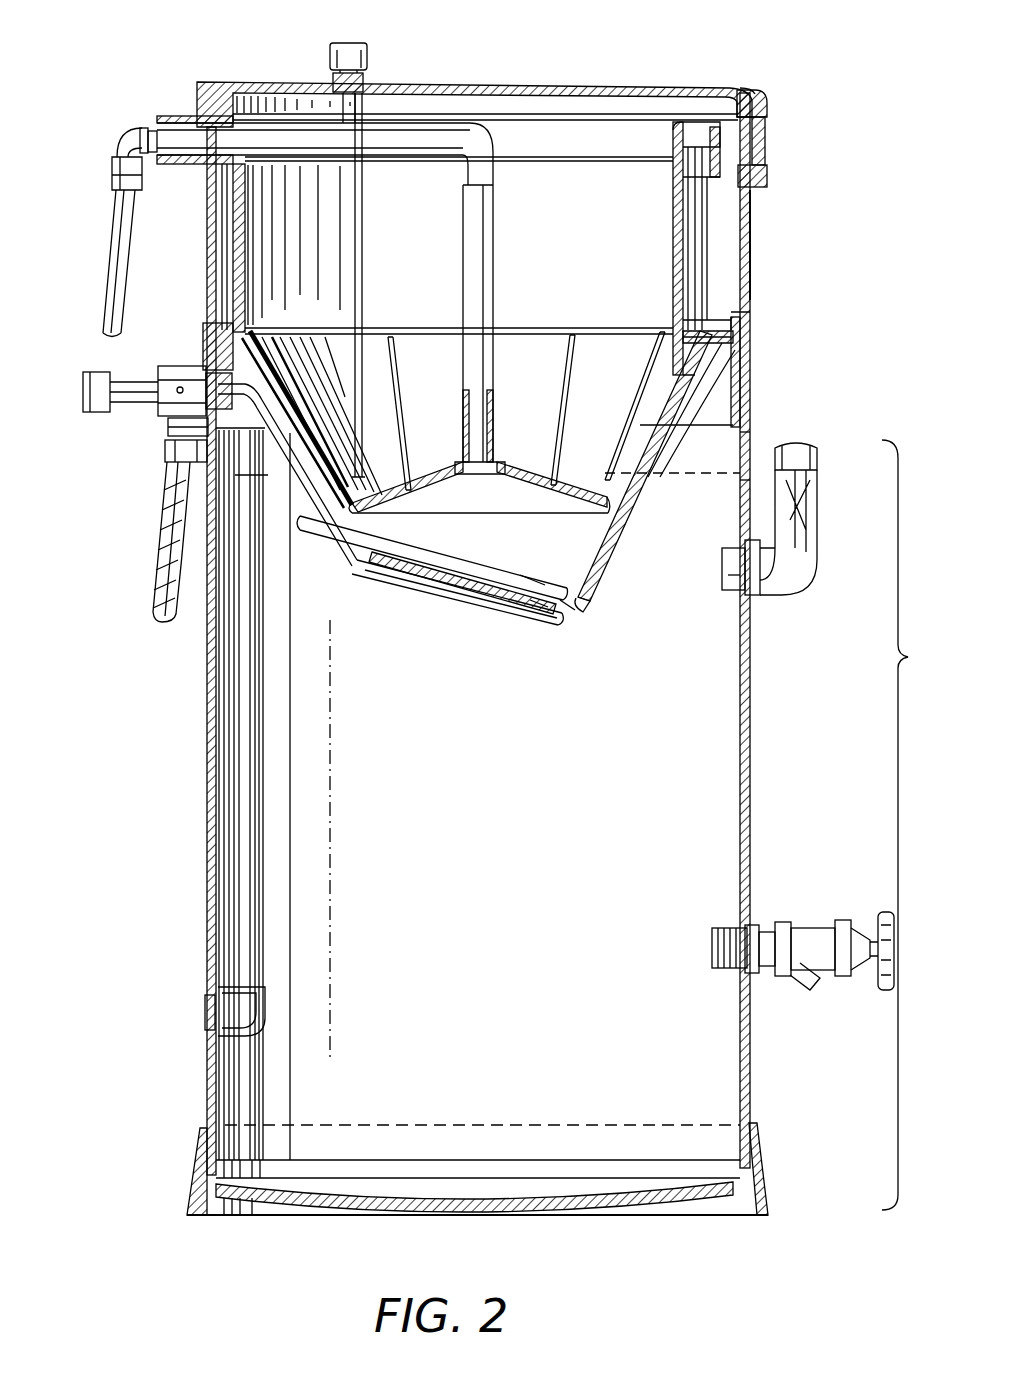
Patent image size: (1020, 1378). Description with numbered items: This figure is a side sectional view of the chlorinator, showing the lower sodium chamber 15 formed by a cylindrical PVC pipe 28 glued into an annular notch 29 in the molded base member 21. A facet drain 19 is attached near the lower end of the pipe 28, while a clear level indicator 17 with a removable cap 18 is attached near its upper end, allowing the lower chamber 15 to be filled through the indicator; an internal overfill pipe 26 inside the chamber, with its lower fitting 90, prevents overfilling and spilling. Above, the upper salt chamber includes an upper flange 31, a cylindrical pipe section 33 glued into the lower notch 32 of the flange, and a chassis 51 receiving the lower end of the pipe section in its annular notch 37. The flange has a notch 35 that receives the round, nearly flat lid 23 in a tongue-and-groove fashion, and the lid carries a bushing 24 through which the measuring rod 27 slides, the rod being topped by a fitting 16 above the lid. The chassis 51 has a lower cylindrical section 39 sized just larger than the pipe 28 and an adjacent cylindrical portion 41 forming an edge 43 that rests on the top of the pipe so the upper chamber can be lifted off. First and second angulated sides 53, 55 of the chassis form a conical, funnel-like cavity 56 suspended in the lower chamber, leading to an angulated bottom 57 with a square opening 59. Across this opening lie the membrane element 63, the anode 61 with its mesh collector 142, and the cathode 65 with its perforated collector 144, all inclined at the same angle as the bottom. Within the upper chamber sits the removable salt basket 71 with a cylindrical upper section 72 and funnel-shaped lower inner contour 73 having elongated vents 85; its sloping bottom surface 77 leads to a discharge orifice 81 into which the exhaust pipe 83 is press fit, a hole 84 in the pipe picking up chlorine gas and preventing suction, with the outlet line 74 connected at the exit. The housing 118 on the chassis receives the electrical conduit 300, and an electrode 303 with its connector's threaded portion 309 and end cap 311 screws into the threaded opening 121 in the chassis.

The lower sodium chamber 15 is at (909, 825).
The inlet fitting 16 is at (330, 53).
The clear level indicator 17 is at (807, 511).
The removable cap 18 is at (817, 467).
The facet drain 19 is at (803, 930).
The base member 21 is at (767, 1168).
The lid 23 is at (622, 88).
The bushing 24 is at (380, 83).
The internal overfill pipe 26 is at (258, 743).
The measuring rod 27 is at (362, 206).
The pipe 28 is at (752, 815).
The annular notch 29 is at (717, 1200).
The upper flange 31 is at (760, 138).
The lower notch 32 is at (766, 178).
The cylindrical pipe section 33 is at (752, 225).
The notch 35 is at (752, 90).
The annular notch 37 is at (748, 313).
The lower cylindrical section 39 is at (745, 494).
The second generally cylindrical portion 41 is at (752, 376).
The edge 43 is at (737, 430).
The chassis 51 is at (752, 438).
The first angulated side 53 is at (630, 525).
The second angulated side 55 is at (322, 532).
The funnel-like cavity 56 is at (603, 580).
The angulated bottom 57 is at (568, 614).
The square opening 59 is at (472, 592).
The anode 61 is at (480, 575).
The membrane element 63 is at (540, 618).
The cathode 65 is at (405, 585).
The salt basket 71 is at (665, 232).
The upper section 72 is at (553, 170).
The lower inner contour 73 is at (523, 350).
The line 74 is at (112, 247).
The bottom surface 77 is at (517, 482).
The discharge orifice 81 is at (477, 475).
The exhaust pipe 83 is at (493, 406).
The hole 84 is at (470, 130).
The elongated vents 85 is at (397, 388).
The lower elbow 90 is at (265, 1005).
The housing 118 is at (181, 386).
The threaded opening 121 is at (200, 422).
The mesh collector 142 is at (527, 574).
The perforated collector 144 is at (503, 608).
The conduit 300 is at (155, 572).
The electrode 303 is at (163, 455).
The threaded portion 309 is at (207, 372).
The end cap 311 is at (80, 378).